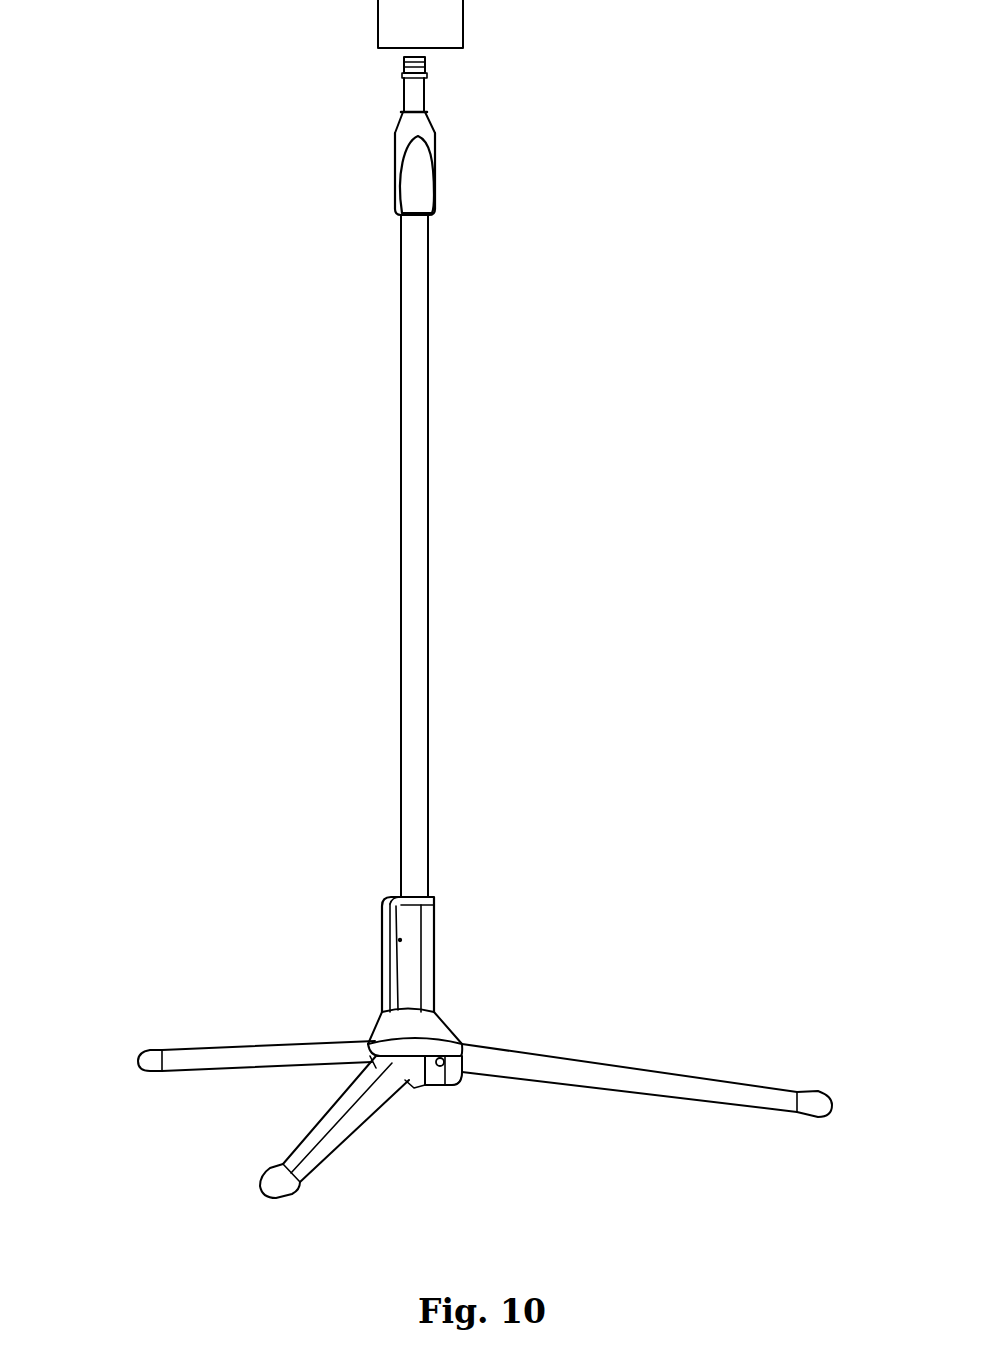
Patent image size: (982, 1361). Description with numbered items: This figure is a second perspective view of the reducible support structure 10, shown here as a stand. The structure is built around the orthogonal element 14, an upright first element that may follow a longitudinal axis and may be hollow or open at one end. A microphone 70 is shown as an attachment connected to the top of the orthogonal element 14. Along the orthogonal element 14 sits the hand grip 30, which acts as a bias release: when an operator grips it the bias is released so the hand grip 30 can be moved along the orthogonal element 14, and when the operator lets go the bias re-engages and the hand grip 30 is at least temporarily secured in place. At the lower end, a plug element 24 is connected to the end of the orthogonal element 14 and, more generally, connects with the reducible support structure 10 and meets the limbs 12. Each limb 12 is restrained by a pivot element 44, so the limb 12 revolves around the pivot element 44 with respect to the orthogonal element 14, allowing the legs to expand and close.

The reducible support structure 10 is at (192, 550).
The microphone 70 is at (420, 24).
The orthogonal element 14 is at (420, 381).
The hand grip 30 is at (388, 1010).
The pivot element 44 is at (442, 1060).
The plug element 24 is at (442, 1083).
The limb 12 is at (210, 1064).